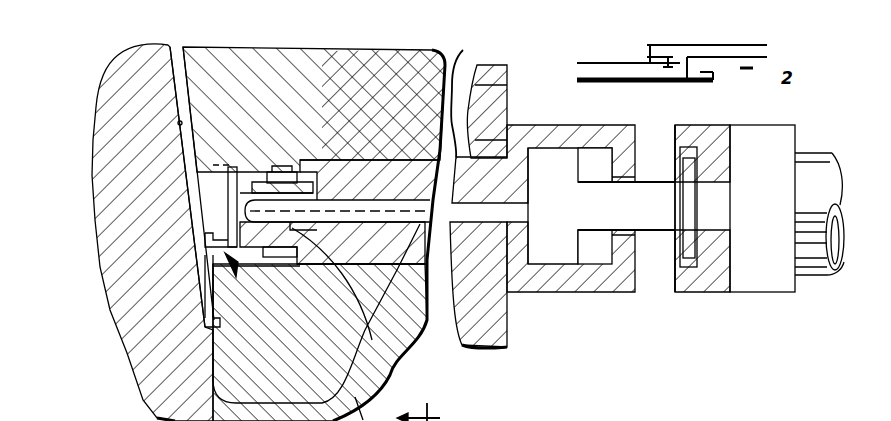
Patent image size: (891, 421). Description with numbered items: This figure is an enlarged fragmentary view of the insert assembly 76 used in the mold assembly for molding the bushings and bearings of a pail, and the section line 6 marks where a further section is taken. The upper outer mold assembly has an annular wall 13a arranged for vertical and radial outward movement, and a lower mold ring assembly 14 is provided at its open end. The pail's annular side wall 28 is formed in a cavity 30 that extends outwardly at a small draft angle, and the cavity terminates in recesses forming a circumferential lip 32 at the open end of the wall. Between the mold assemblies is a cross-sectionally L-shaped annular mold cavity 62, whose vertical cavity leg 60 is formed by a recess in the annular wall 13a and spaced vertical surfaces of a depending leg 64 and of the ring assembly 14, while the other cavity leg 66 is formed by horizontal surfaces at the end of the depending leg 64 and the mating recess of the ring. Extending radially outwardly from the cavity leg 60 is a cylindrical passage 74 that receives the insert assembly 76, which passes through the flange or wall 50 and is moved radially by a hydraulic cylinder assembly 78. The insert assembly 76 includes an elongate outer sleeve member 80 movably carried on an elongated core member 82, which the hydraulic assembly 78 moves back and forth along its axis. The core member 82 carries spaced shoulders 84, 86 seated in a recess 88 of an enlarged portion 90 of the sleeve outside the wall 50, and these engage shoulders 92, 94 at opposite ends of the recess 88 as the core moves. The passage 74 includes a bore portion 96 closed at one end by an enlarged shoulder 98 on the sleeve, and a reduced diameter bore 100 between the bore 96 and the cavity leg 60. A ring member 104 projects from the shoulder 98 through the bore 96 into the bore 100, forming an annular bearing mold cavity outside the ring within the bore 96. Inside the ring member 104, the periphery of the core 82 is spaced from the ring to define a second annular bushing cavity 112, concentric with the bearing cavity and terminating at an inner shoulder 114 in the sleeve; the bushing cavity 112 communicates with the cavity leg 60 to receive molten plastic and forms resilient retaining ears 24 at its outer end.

The section line 6- 6 is at (418, 409).
The annular wall 13a is at (252, 101).
The lower mold ring assembly 14 is at (292, 362).
The retaining ears 24 is at (403, 155).
The annular side wall 28 is at (182, 101).
The cavity 30 is at (180, 135).
The lip 32 is at (212, 316).
The wall 50 is at (493, 95).
The cavity leg 60 is at (232, 182).
The annular mold cavity 62 is at (190, 352).
The depending leg 64 is at (220, 233).
The cavity leg 66 is at (200, 258).
The passage 74 is at (391, 160).
The insert assembly 76 is at (460, 68).
The hydraulic cylinder assembly 78 is at (801, 150).
The outer sleeve member 80 is at (300, 222).
The core member 82 is at (528, 288).
The shoulder 84 is at (613, 272).
The shoulder 86 is at (527, 243).
The recess 88 is at (597, 160).
The enlarged portion 90 is at (568, 293).
The shoulder 92 is at (613, 253).
The shoulder 94 is at (568, 270).
The bore portion 96 is at (254, 185).
The enlarged shoulder 98 is at (308, 170).
The reduced diameter bore 100 is at (282, 172).
The ring member 104 is at (230, 208).
The bushing cavity 112 is at (300, 250).
The inner shoulder 114 is at (297, 235).